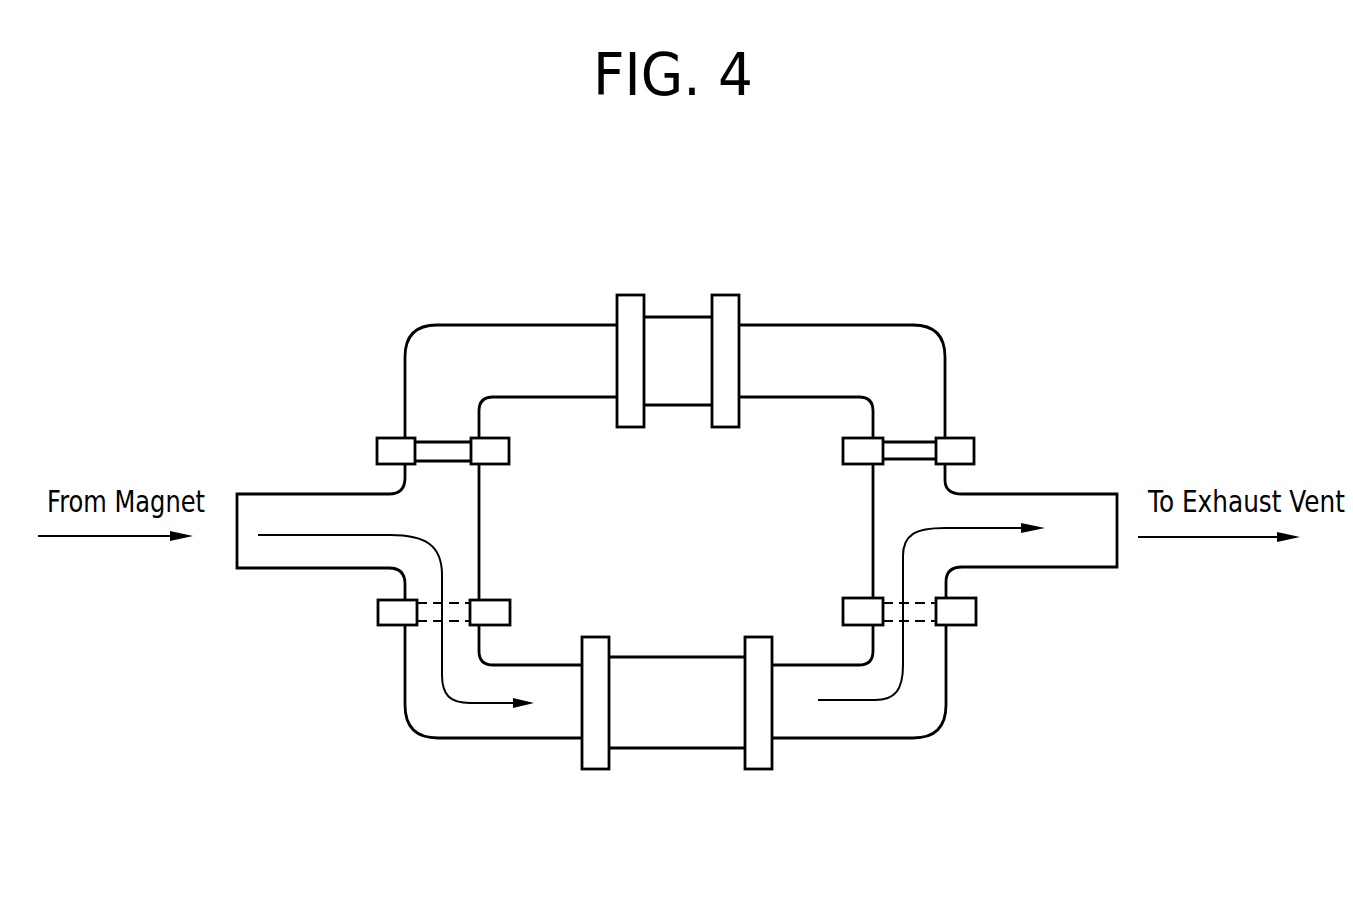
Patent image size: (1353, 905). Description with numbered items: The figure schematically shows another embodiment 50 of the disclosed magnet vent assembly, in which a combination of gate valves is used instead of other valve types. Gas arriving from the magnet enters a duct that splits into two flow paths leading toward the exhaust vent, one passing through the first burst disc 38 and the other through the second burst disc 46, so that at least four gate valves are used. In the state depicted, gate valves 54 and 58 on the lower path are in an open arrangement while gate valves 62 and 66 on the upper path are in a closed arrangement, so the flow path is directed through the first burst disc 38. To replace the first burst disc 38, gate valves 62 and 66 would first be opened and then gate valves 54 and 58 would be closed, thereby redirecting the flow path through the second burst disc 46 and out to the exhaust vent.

The magnet vent assembly embodiment 50 is at (300, 222).
The second burst disc 46 is at (677, 325).
The first burst disc 38 is at (678, 750).
The gate valve 62 is at (393, 445).
The gate valve 66 is at (956, 445).
The gate valve 54 is at (382, 615).
The gate valve 58 is at (967, 612).